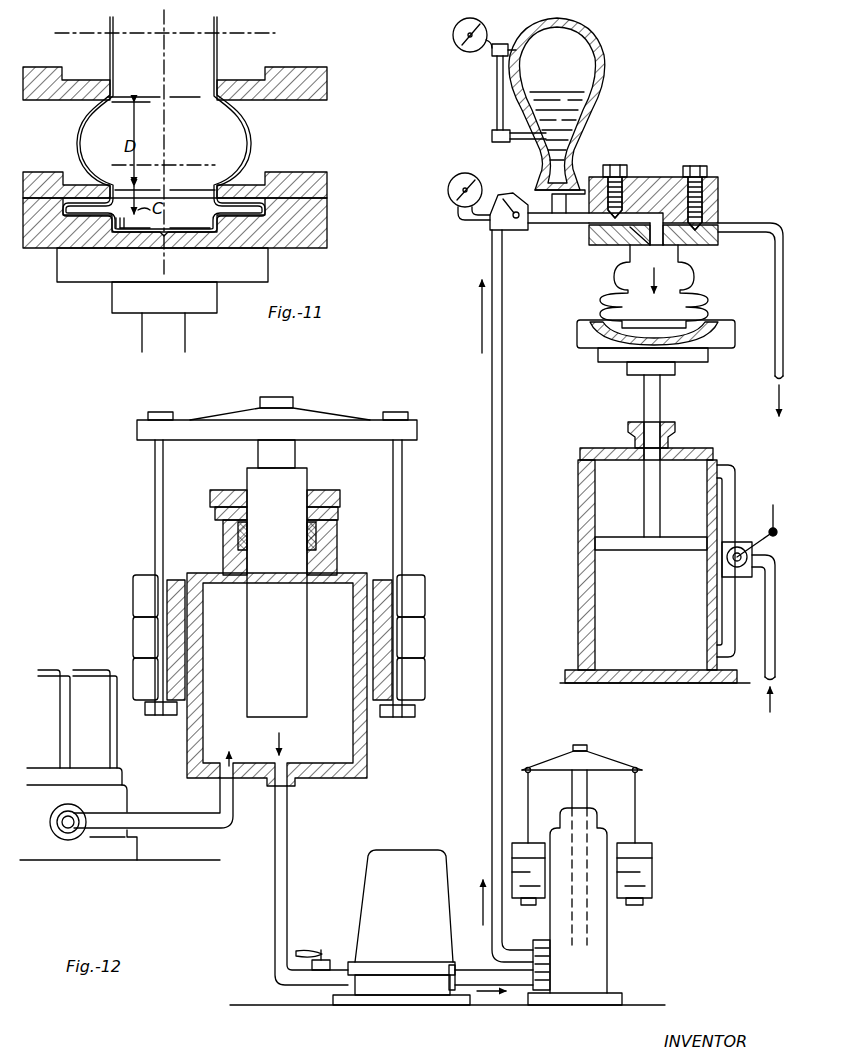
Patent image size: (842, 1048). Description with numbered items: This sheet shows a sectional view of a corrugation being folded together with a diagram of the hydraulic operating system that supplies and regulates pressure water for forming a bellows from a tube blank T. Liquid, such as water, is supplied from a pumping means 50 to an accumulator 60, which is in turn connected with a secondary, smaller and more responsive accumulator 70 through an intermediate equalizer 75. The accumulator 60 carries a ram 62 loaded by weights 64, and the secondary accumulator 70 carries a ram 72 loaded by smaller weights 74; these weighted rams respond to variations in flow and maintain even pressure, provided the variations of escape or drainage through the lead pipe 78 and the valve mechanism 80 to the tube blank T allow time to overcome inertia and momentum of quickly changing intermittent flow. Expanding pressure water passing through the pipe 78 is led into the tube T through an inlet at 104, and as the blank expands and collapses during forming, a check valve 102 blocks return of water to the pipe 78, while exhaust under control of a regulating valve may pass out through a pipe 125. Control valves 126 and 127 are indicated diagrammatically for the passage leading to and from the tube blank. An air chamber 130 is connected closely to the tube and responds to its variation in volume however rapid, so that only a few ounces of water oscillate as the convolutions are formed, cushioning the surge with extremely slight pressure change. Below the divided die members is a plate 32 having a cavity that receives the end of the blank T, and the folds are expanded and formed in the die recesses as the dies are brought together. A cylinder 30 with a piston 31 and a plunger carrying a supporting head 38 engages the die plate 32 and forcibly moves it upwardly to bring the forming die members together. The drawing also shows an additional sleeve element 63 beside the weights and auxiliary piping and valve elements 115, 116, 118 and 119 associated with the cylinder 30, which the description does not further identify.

In FIG. 11, the tube blank T is at (253, 132).
In FIG. 12, the tube blank T is at (682, 263).
In FIG. 11, the plate 32 is at (303, 216).
In FIG. 12, the plate 32 is at (577, 335).
In FIG. 11, the supporting head 38 is at (162, 280).
In FIG. 12, the supporting head 38 is at (610, 362).
In FIG. 11, the piston 31 is at (183, 335).
In FIG. 12, the piston 31 is at (660, 410).
In FIG. 12, the cylinder 30 is at (578, 530).
In FIG. 12, the pumping means 50 is at (120, 765).
In FIG. 12, the accumulator 60 is at (330, 778).
In FIG. 12, the ram 62 is at (277, 592).
In FIG. 12, the packing sleeve 63 is at (395, 640).
In FIG. 12, the weights 64 is at (133, 601).
In FIG. 12, the secondary accumulator 70 is at (608, 941).
In FIG. 12, the ram 72 is at (576, 948).
In FIG. 12, the smaller weights 74 is at (652, 846).
In FIG. 12, the intermediate equalizer 75 is at (401, 927).
In FIG. 12, the lead pipe 78 is at (502, 488).
In FIG. 12, the valve mechanism 80 is at (668, 176).
In FIG. 12, the check valve 102 is at (510, 230).
In FIG. 12, the inlet 104 is at (626, 246).
In FIG. 12, the bypass pipe 115 is at (737, 492).
In FIG. 12, the pipe 116 is at (735, 626).
In FIG. 12, the control valve 118 is at (762, 530).
In FIG. 12, the inlet pipe 119 is at (757, 697).
In FIG. 12, the pipe 125 is at (762, 212).
In FIG. 12, the control valve 126 is at (618, 165).
In FIG. 12, the control valve 127 is at (705, 170).
In FIG. 12, the air chamber 130 is at (557, 115).